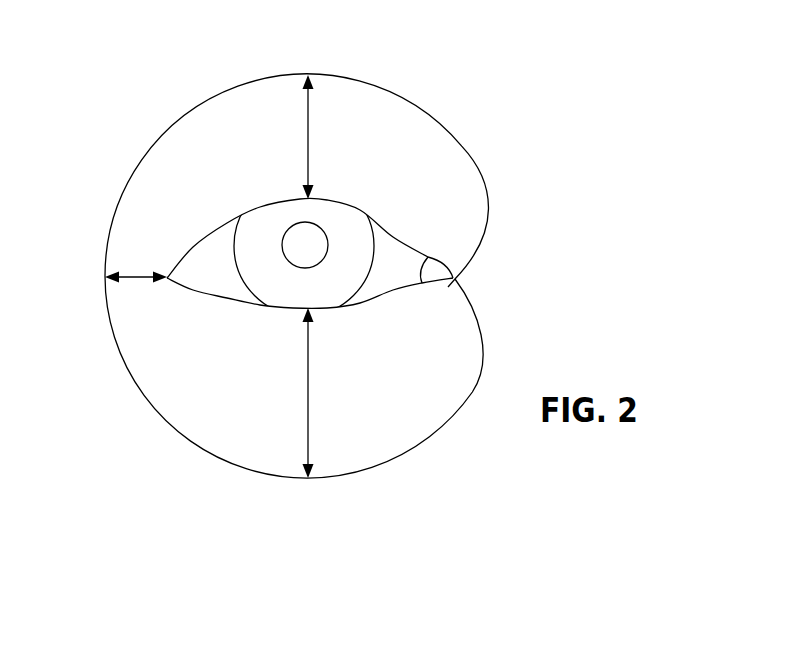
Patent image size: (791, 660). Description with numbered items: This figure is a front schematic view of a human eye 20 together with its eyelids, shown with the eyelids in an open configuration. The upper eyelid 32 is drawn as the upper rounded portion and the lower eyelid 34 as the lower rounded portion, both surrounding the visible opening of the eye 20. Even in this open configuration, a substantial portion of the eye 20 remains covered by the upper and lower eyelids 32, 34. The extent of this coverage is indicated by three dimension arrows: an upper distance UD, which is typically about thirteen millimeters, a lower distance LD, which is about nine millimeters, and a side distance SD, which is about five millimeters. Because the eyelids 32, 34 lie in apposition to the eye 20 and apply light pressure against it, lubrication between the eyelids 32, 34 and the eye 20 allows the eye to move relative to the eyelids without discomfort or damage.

The human eye 20 is at (395, 253).
The upper eyelid 32 is at (188, 140).
The lower eyelid 34 is at (188, 408).
The upper distance UD is at (313, 102).
The lower distance LD is at (310, 445).
The side distance SD is at (136, 273).